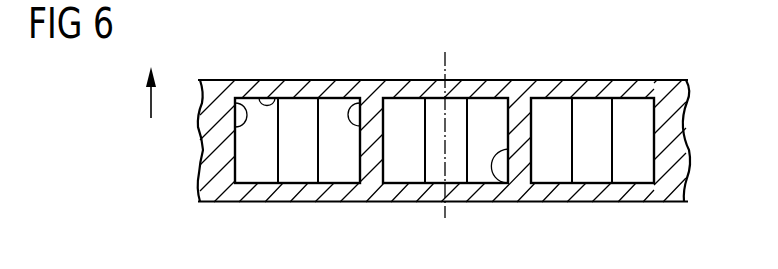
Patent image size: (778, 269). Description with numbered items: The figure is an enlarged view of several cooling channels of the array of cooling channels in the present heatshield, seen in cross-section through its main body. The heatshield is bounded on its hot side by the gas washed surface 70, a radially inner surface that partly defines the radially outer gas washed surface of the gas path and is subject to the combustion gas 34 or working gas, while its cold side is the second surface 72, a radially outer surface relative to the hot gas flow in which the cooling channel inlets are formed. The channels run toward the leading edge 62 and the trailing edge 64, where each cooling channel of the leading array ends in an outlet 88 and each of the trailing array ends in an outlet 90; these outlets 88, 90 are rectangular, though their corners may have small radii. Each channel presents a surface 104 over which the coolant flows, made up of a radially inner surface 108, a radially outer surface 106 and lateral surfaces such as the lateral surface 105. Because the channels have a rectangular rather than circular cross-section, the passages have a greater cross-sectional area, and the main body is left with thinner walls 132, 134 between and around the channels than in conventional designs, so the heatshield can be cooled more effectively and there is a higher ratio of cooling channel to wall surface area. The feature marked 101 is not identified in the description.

The combustion gas 34 is at (151, 100).
The leading edge 62 is at (508, 80).
The trailing edge 64 is at (574, 99).
The gas washed surface 70 is at (477, 202).
The second surface 72 is at (247, 80).
The outlet 88 is at (340, 95).
The outlet 90 is at (346, 52).
The side coating 101 is at (361, 100).
The surface 104 is at (243, 172).
The lateral surface 105 is at (206, 82).
The radially outer surface 106 is at (267, 98).
The radially inner surface 108 is at (298, 183).
The wall 132 is at (613, 192).
The wall 134 is at (507, 183).